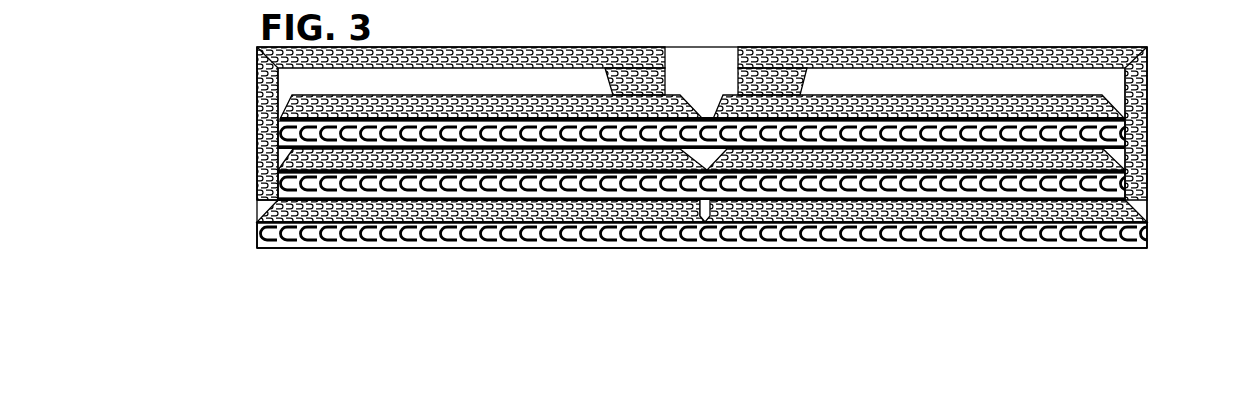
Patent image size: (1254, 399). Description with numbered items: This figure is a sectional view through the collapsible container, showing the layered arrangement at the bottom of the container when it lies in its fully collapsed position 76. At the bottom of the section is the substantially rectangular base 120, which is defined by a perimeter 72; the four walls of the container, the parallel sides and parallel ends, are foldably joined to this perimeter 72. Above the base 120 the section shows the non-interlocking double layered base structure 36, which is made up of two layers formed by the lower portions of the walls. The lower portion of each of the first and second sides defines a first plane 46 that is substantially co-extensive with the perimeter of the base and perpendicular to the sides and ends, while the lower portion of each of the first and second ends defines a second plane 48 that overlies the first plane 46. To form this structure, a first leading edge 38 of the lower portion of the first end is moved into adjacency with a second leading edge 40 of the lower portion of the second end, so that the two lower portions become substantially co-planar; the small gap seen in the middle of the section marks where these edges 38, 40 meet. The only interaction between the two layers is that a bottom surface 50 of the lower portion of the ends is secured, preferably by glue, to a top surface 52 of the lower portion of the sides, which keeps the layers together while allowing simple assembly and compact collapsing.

The non-interlocking double layered base structure 36 is at (247, 200).
The first leading edge 38 is at (706, 224).
The second leading edge 40 is at (703, 224).
The first plane 46 is at (791, 238).
The second plane 48 is at (569, 210).
The bottom surface 50 is at (298, 213).
The top surface 52 is at (622, 224).
The perimeter 72 is at (1147, 237).
The fully collapsed position 76 is at (1179, 62).
The base 120 is at (1110, 267).